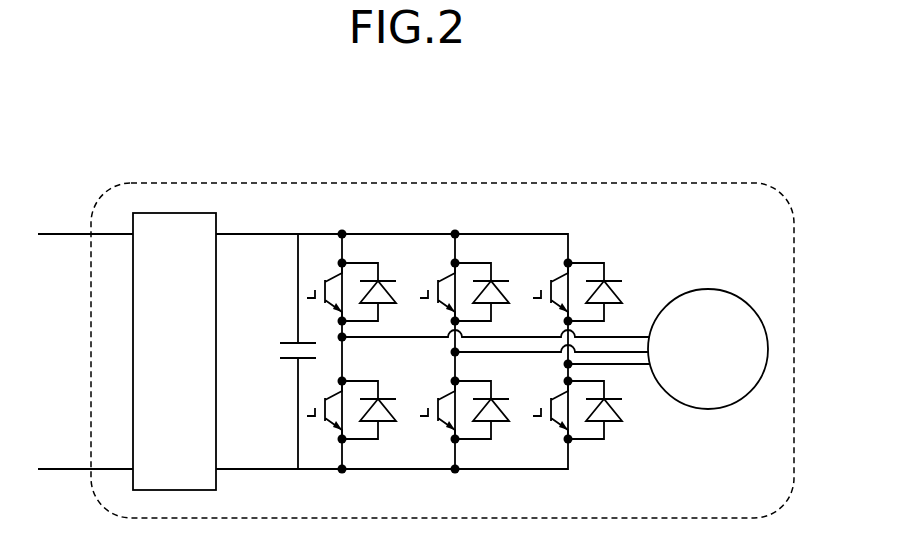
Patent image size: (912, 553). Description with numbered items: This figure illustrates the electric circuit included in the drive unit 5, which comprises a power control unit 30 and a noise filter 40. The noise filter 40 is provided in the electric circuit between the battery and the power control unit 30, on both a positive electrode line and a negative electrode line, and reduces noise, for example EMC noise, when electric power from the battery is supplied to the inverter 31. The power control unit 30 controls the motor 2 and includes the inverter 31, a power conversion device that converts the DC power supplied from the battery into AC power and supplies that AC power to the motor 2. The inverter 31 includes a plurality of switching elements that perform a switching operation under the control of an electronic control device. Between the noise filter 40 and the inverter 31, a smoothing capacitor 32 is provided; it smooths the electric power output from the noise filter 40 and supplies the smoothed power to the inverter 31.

The motor 2 is at (728, 290).
The drive unit 5 is at (732, 183).
The power control unit 30 is at (478, 288).
The inverter 31 is at (386, 208).
The smoothing capacitor 32 is at (290, 342).
The noise filter 40 is at (170, 213).